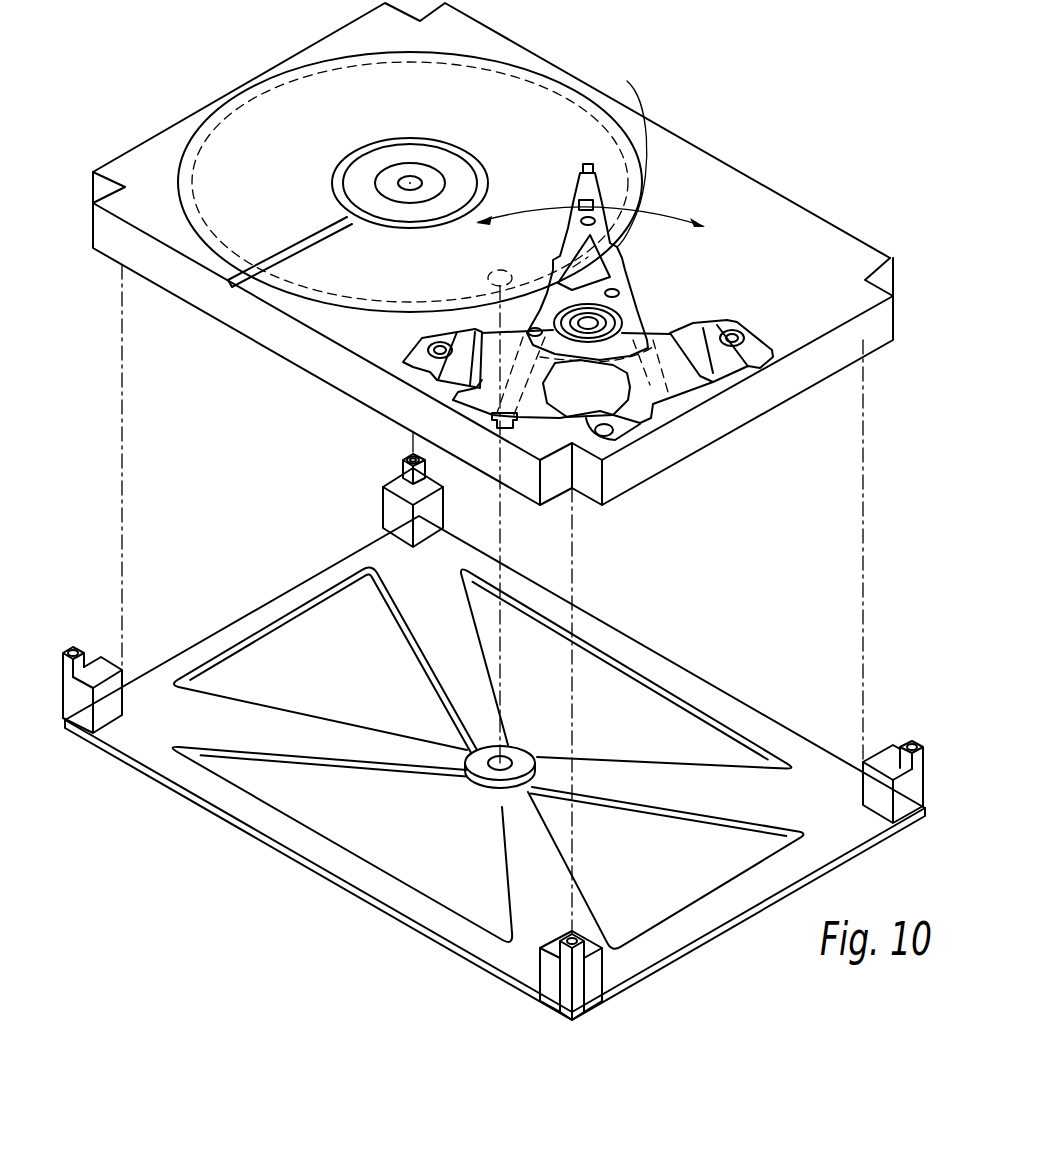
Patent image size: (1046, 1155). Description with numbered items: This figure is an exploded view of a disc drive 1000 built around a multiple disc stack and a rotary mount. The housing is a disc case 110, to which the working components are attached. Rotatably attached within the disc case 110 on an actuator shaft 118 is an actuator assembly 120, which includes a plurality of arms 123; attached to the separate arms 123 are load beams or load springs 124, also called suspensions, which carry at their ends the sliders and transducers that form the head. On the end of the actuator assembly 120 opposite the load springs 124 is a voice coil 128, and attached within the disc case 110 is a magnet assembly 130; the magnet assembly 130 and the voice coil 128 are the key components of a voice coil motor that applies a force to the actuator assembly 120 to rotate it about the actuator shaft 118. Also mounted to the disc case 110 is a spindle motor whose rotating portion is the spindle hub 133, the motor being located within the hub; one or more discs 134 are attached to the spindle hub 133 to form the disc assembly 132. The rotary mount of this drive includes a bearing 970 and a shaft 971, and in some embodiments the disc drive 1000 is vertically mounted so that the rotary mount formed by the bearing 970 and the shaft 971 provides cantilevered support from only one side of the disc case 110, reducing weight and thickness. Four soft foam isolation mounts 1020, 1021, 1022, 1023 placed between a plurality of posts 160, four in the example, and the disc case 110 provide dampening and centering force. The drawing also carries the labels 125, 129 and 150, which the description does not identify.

The disc drive 1000 is at (806, 70).
The disc case 110 is at (325, 377).
The actuator shaft 118 is at (748, 366).
The actuator assembly 120 is at (620, 294).
The arms 123 is at (620, 250).
The load springs 124 is at (579, 183).
The read/write head 125 is at (593, 168).
The voice coil 128 is at (653, 403).
The actuator sweep arc 129 is at (705, 224).
The magnet assembly 130 is at (703, 390).
The disc assembly 132 is at (226, 129).
The spindle hub 133 is at (386, 162).
The discs 134 is at (194, 134).
The cover plate 150 is at (584, 164).
The posts 160 is at (408, 460).
The bearing 970 is at (523, 747).
The shaft 971 is at (488, 284).
The soft foam isolation mount 1020 is at (118, 696).
The soft foam isolation mount 1021 is at (388, 500).
The soft foam isolation mount 1022 is at (602, 968).
The soft foam isolation mount 1023 is at (862, 792).